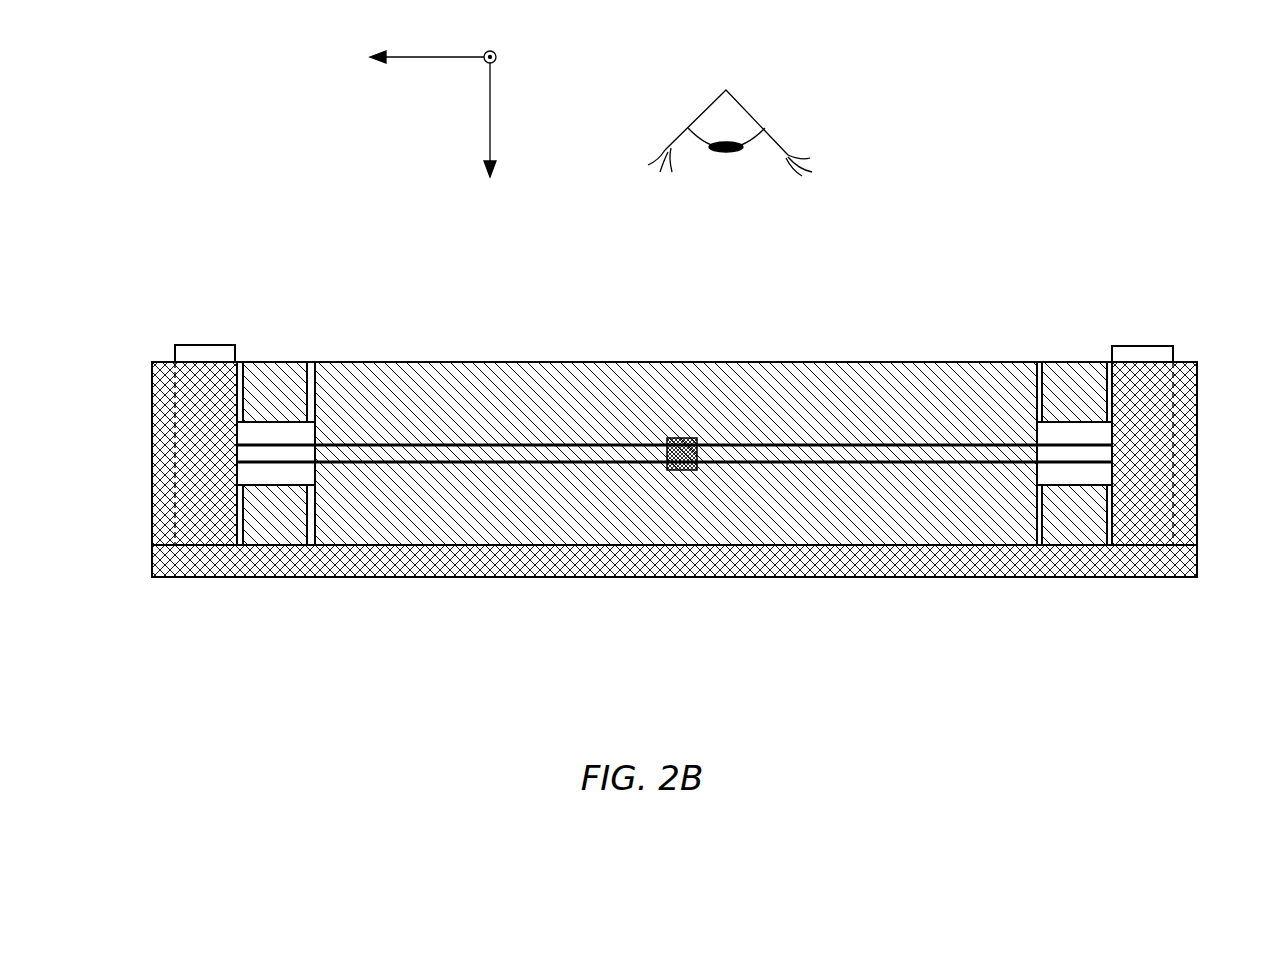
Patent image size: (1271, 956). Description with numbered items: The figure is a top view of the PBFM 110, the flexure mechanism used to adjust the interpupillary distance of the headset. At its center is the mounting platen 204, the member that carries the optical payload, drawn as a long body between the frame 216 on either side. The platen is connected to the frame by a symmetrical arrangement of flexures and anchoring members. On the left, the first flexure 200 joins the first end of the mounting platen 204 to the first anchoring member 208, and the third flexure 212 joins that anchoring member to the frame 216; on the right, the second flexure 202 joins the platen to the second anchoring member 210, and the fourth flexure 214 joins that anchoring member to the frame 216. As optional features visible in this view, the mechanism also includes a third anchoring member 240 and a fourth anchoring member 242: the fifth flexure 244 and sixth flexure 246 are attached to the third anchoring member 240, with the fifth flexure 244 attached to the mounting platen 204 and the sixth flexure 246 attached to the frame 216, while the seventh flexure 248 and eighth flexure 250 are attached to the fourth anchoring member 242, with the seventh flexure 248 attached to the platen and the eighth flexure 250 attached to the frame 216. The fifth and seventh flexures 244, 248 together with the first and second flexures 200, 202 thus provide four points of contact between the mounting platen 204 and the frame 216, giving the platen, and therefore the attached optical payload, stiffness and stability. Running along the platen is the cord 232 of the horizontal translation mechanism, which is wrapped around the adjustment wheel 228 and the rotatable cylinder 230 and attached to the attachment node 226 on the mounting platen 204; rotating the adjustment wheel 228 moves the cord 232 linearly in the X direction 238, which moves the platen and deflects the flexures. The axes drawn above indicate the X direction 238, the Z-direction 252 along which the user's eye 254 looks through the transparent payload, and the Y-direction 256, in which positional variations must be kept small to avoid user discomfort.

The PBFM 110 is at (1090, 150).
The first flexure 200 is at (311, 515).
The second flexure 202 is at (1039, 520).
The mounting platen 204 is at (827, 385).
The first anchoring member 208 is at (293, 520).
The second anchoring member 210 is at (1055, 520).
The third flexure 212 is at (240, 520).
The fourth flexure 214 is at (1110, 520).
The frame 216 is at (150, 525).
The attachment node 226 is at (688, 438).
The adjustment wheel 228 is at (1142, 353).
The rotatable cylinder 230 is at (190, 353).
The cord 232 is at (463, 442).
The X direction 238 is at (412, 65).
The third anchoring member 240 is at (278, 390).
The fourth anchoring member 242 is at (1070, 390).
The fifth flexure 244 is at (311, 385).
The sixth flexure 246 is at (240, 375).
The seventh flexure 248 is at (1036, 380).
The eighth flexure 250 is at (1108, 380).
The Z-direction 252 is at (492, 105).
The eye 254 is at (750, 112).
The Y-direction 256 is at (497, 60).